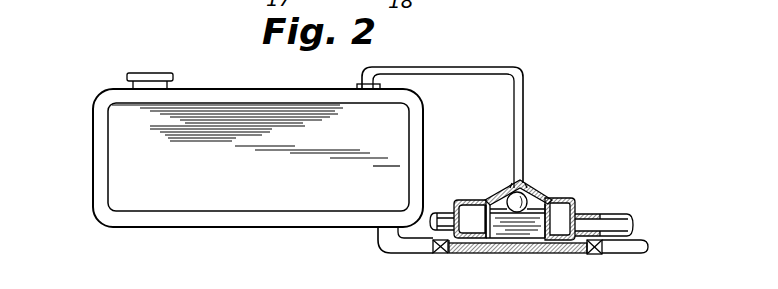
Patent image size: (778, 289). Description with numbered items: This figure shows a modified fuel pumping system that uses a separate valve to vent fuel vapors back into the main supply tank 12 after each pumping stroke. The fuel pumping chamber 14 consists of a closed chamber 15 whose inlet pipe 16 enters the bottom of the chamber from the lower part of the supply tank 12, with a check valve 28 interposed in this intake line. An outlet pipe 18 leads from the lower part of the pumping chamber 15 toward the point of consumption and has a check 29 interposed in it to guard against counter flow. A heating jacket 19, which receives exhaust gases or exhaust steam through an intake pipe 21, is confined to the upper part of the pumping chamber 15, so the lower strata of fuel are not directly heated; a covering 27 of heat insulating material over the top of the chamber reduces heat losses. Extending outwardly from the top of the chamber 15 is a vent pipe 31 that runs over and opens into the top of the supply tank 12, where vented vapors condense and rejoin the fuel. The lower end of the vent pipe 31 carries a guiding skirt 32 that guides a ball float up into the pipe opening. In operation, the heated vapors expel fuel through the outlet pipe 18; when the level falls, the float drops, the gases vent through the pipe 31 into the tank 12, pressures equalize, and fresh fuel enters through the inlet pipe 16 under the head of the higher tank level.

The fuel supply tank 12 is at (120, 178).
The fuel pumping chamber 14 is at (563, 190).
The closed chamber 15 is at (482, 198).
The inlet pipe 16 is at (458, 253).
The outlet pipe 18 is at (627, 253).
The heating jacket 19 is at (576, 200).
The intake pipe 21 is at (512, 190).
The covering of heat insulating material 27 is at (490, 191).
The check valve 28 is at (441, 253).
The check 29 is at (598, 254).
The vent pipe 31 is at (523, 130).
The guiding skirt 32 is at (524, 185).